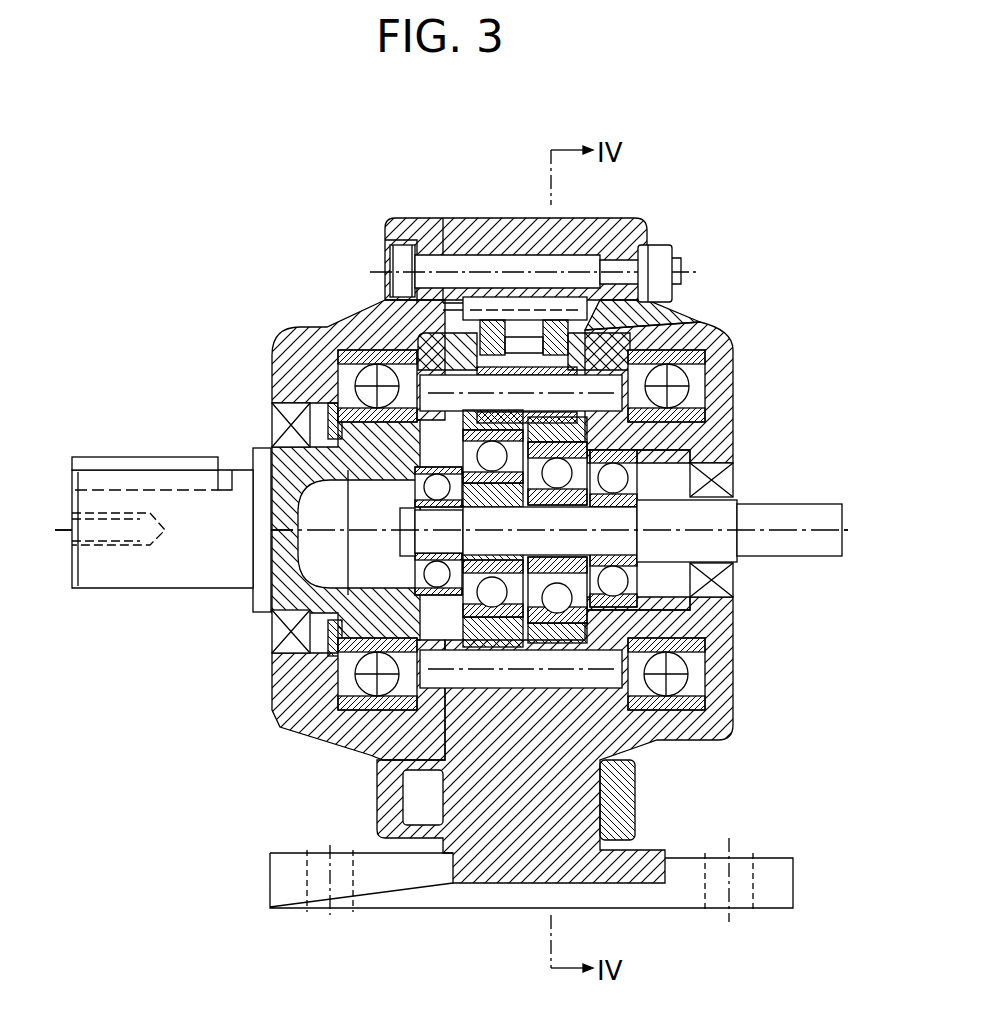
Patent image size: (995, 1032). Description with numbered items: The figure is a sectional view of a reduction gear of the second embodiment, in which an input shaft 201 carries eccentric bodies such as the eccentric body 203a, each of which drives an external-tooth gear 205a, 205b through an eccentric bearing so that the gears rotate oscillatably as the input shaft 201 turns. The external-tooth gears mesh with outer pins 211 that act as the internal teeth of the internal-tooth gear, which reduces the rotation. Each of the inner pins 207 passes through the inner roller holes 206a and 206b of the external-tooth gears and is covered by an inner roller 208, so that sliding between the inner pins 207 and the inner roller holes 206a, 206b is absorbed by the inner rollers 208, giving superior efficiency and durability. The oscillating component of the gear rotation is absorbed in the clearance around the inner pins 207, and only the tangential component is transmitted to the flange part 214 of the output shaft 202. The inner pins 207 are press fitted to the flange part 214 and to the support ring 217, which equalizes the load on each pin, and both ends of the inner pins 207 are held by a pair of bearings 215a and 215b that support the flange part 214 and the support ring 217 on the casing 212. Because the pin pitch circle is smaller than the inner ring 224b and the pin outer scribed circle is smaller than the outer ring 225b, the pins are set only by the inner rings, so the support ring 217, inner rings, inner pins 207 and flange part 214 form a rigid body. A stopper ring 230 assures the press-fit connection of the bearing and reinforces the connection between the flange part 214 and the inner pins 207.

The input shaft 201 is at (770, 547).
The output shaft 202 is at (120, 575).
The eccentric body 203a is at (598, 615).
The external-tooth gear 205a is at (670, 275).
The external-tooth gear 205b is at (556, 320).
The inner roller hole 206a is at (728, 355).
The inner roller hole 206b is at (643, 222).
The inner pin 207 is at (568, 388).
The inner roller 208 is at (637, 783).
The outer pin 211 is at (473, 302).
The casing 212 is at (325, 328).
The flange part 214 is at (400, 216).
The bearing 215a is at (700, 703).
The bearing 215b is at (327, 733).
The support ring 217 is at (700, 632).
The inner ring of bearing 224b is at (330, 658).
The outer ring of bearing 225b is at (282, 727).
The stopper ring 230 is at (278, 405).